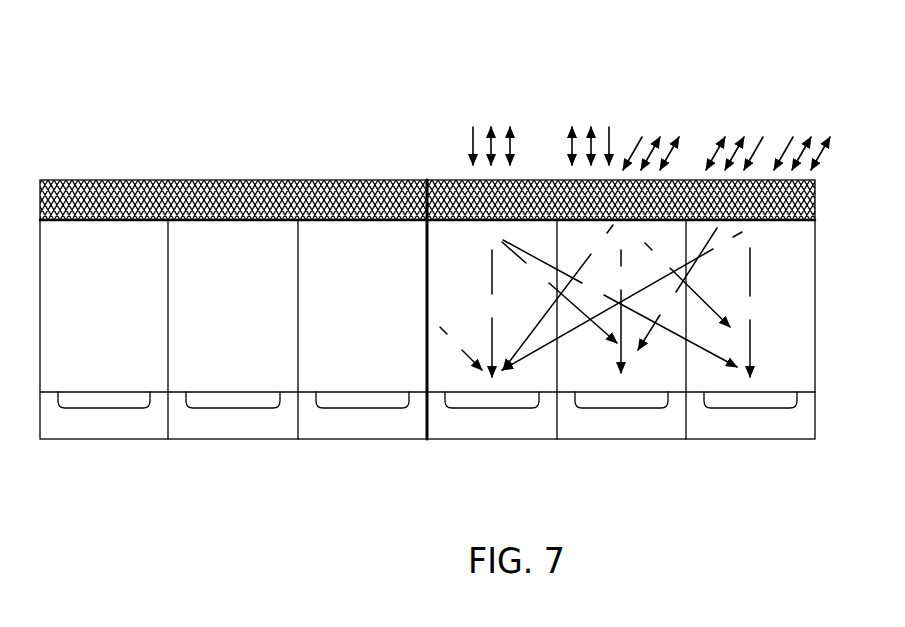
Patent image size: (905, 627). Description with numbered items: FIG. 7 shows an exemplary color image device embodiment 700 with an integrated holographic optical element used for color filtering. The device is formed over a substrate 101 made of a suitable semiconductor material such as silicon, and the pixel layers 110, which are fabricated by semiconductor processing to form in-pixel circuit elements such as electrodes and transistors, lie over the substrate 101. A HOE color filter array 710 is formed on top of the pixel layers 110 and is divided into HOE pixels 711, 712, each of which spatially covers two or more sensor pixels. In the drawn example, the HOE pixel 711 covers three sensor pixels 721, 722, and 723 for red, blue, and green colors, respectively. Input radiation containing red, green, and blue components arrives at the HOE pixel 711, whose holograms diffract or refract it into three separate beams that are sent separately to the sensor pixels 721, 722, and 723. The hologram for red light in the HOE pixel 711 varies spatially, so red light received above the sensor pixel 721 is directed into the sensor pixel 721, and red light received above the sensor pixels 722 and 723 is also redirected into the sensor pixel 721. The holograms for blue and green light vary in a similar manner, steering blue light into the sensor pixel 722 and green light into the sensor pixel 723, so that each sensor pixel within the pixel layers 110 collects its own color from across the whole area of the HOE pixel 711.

The embodiment 700 is at (501, 63).
The HOE color filter array 710 is at (815, 213).
The HOE pixel 711 is at (619, 180).
The HOE pixel 712 is at (242, 182).
The pixel layers 110 is at (822, 390).
The substrate 101 is at (817, 410).
The sensor pixel 721 is at (492, 440).
The sensor pixel 722 is at (622, 440).
The sensor pixel 723 is at (753, 440).